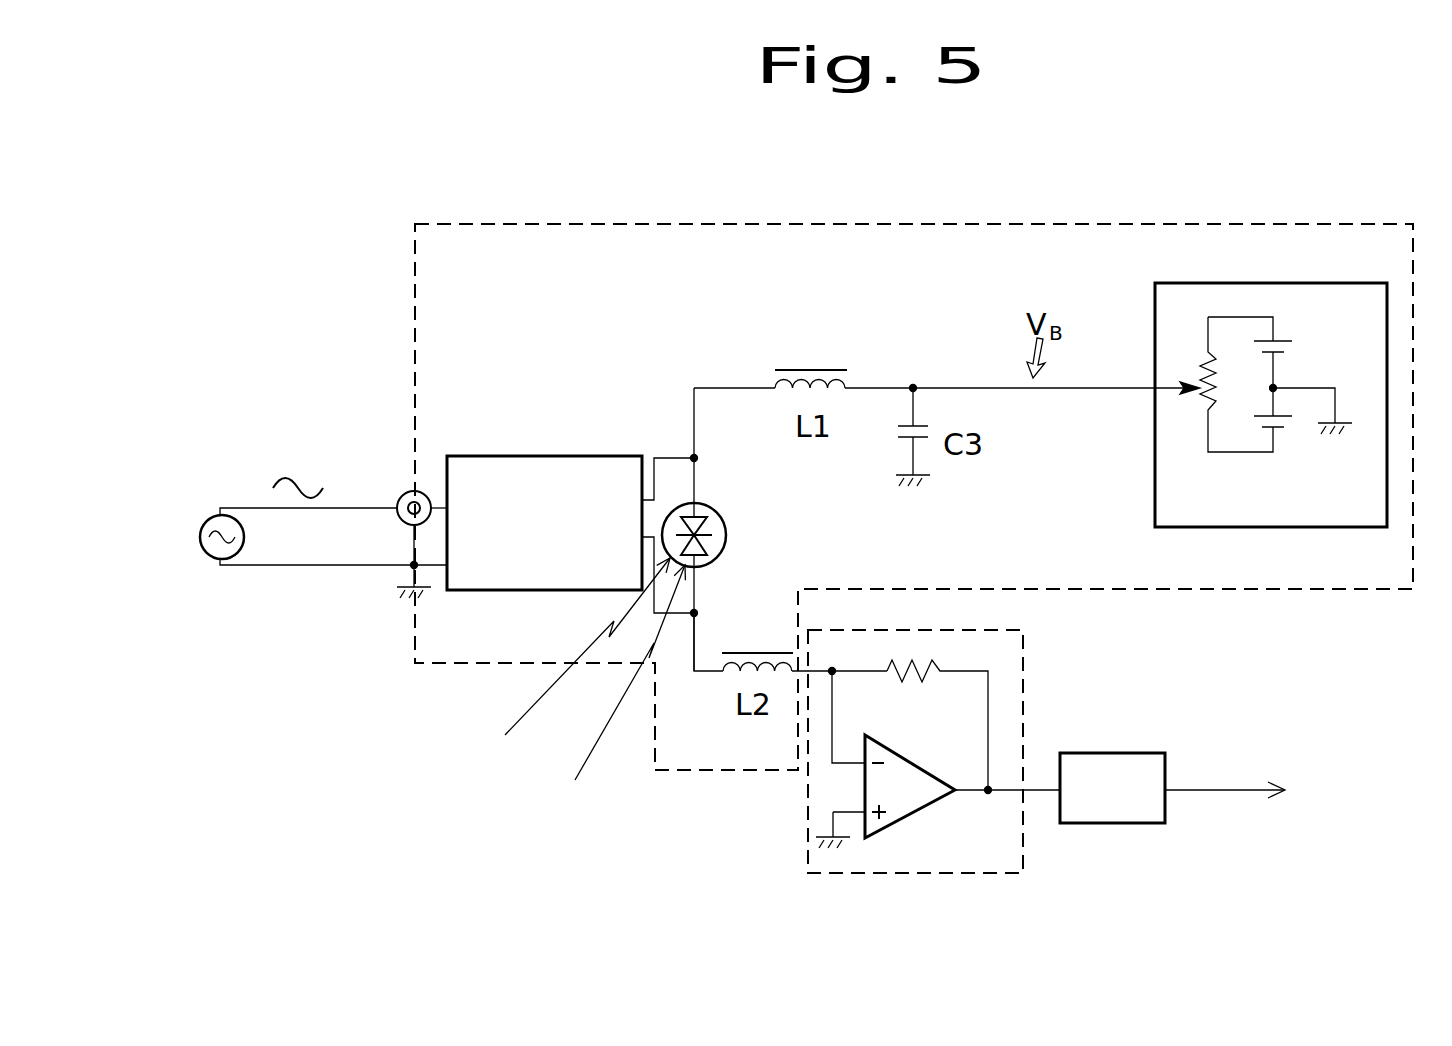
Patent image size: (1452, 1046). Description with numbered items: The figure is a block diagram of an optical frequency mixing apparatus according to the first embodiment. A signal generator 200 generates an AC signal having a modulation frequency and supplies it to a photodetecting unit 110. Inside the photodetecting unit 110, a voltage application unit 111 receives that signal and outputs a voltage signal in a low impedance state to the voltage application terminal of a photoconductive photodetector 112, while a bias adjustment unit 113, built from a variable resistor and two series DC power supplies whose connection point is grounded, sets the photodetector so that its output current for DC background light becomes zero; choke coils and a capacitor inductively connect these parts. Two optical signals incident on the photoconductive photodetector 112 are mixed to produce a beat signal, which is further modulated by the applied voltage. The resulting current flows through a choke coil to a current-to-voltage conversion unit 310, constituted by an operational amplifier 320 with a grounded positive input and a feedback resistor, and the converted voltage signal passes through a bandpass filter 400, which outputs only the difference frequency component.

The photodetecting unit 110 is at (1352, 590).
The voltage application unit 111 is at (539, 456).
The photoconductive photodetector 112 is at (720, 521).
The bias adjustment unit 113 is at (1155, 483).
The signal generator 200 is at (214, 517).
The current-to-voltage conversion unit 310 is at (972, 742).
The operational amplifier 320 is at (950, 762).
The bandpass filter 400 is at (1139, 752).